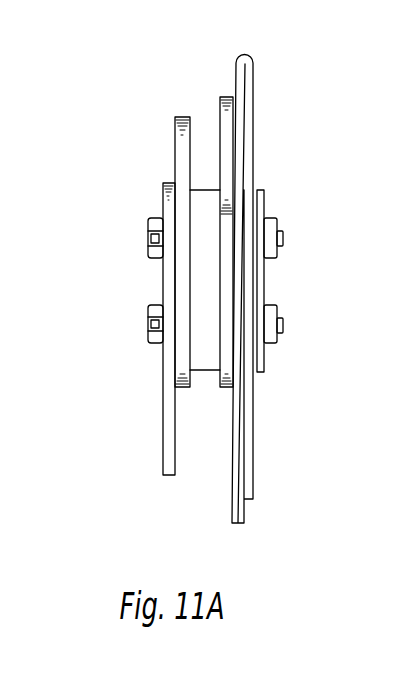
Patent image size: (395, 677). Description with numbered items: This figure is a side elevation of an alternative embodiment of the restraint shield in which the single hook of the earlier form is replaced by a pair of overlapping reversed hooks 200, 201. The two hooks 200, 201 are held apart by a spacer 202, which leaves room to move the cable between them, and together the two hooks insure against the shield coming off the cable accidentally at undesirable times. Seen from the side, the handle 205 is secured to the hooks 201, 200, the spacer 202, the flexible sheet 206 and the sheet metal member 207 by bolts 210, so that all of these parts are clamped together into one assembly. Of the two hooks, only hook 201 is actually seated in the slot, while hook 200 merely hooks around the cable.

The hook 200 is at (220, 97).
The hook 201 is at (180, 130).
The spacer 202 is at (202, 347).
The handle 205 is at (167, 432).
The flexible sheet 206 is at (236, 462).
The sheet metal member 207 is at (257, 373).
The bolts 210 is at (148, 229).